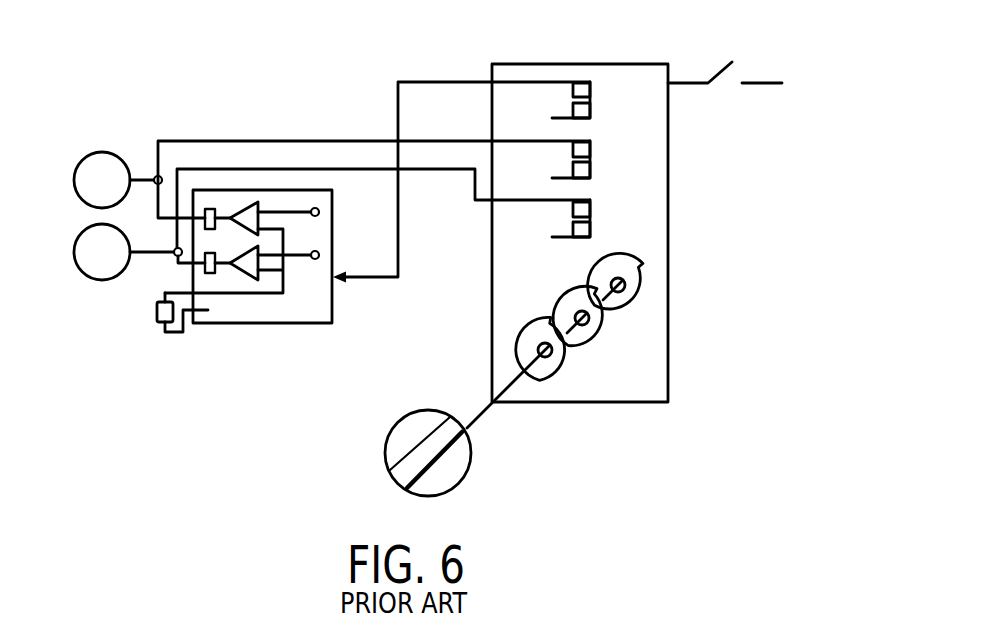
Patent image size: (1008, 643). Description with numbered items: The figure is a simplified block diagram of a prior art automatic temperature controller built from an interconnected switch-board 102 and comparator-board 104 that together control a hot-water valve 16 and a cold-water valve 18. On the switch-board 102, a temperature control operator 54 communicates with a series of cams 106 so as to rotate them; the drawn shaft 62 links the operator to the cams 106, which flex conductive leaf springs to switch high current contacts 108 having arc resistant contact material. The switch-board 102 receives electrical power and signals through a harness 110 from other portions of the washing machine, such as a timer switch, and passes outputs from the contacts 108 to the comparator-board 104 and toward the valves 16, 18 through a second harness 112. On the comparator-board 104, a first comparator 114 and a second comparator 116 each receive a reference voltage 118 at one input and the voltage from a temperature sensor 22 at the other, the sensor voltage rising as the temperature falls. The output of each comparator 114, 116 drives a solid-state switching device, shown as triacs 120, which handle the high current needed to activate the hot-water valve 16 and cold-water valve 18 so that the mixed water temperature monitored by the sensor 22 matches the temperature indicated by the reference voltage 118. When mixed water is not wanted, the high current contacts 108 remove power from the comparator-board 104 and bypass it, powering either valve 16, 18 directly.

The hot-water valve 16 is at (76, 171).
The cold-water valve 18 is at (75, 251).
The temperature sensor 22 is at (157, 313).
The temperature control operator 54 is at (397, 417).
The drive shaft 62 is at (512, 385).
The switch-board 102 is at (643, 385).
The comparator-board 104 is at (307, 310).
The cams 106 is at (567, 362).
The high current contacts 108 is at (590, 198).
The harness 110 is at (688, 85).
The harness 112 is at (453, 167).
The first comparator 114 is at (246, 209).
The second comparator 116 is at (246, 266).
The reference voltage 118 is at (320, 213).
The triacs 120 is at (370, 154).